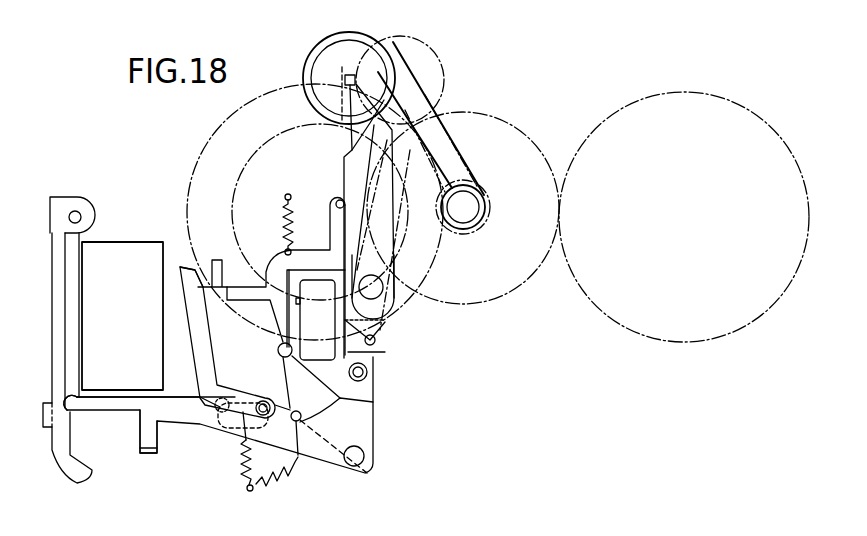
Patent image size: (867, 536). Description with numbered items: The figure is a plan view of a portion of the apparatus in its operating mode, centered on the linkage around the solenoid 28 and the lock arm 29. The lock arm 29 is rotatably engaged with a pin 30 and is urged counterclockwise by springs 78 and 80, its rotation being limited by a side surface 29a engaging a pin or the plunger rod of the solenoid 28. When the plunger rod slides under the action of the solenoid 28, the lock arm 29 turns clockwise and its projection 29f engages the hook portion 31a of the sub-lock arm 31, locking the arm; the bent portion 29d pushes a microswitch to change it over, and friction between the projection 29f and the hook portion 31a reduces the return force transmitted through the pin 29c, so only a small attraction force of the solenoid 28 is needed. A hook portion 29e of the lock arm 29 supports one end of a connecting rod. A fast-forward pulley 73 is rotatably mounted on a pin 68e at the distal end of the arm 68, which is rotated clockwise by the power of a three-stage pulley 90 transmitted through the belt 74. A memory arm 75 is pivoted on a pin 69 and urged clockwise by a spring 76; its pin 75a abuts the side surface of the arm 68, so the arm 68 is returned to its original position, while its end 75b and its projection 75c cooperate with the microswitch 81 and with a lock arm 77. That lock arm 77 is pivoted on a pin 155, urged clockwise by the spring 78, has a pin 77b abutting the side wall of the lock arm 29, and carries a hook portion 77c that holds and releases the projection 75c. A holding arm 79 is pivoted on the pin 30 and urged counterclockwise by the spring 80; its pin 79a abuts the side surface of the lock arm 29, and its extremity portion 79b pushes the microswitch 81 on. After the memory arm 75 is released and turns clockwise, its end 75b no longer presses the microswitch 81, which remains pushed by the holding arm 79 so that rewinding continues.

The solenoid 28 is at (118, 242).
The lock arm 29 is at (219, 369).
The side surface 29a is at (100, 395).
The pin 29c is at (367, 373).
The bent portion 29d is at (147, 457).
The hook portion 29e is at (386, 325).
The projection 29f is at (75, 400).
The pin 30 is at (366, 468).
The sub-lock arm 31 is at (69, 340).
The hook portion 31a is at (70, 418).
The arm 68 is at (343, 157).
The pin 68e is at (347, 78).
The pin 69 is at (375, 289).
The fast-forward pulley 73 is at (333, 53).
The belt 74 is at (452, 122).
The memory arm 75 is at (271, 254).
The pin 75a is at (337, 198).
The end 75b is at (280, 343).
The projection 75c is at (230, 258).
The spring 76 is at (280, 213).
The lock arm 77 is at (199, 335).
The pin 77b is at (240, 428).
The hook portion 77c is at (193, 268).
The spring 78 is at (244, 442).
The holding arm 79 is at (322, 387).
The pin 79a is at (298, 425).
The extremity portion 79b is at (279, 352).
The spring 80 is at (285, 474).
The microswitch 81 is at (375, 352).
The three-stage pulley 90 is at (463, 207).
The pin 155 is at (255, 405).